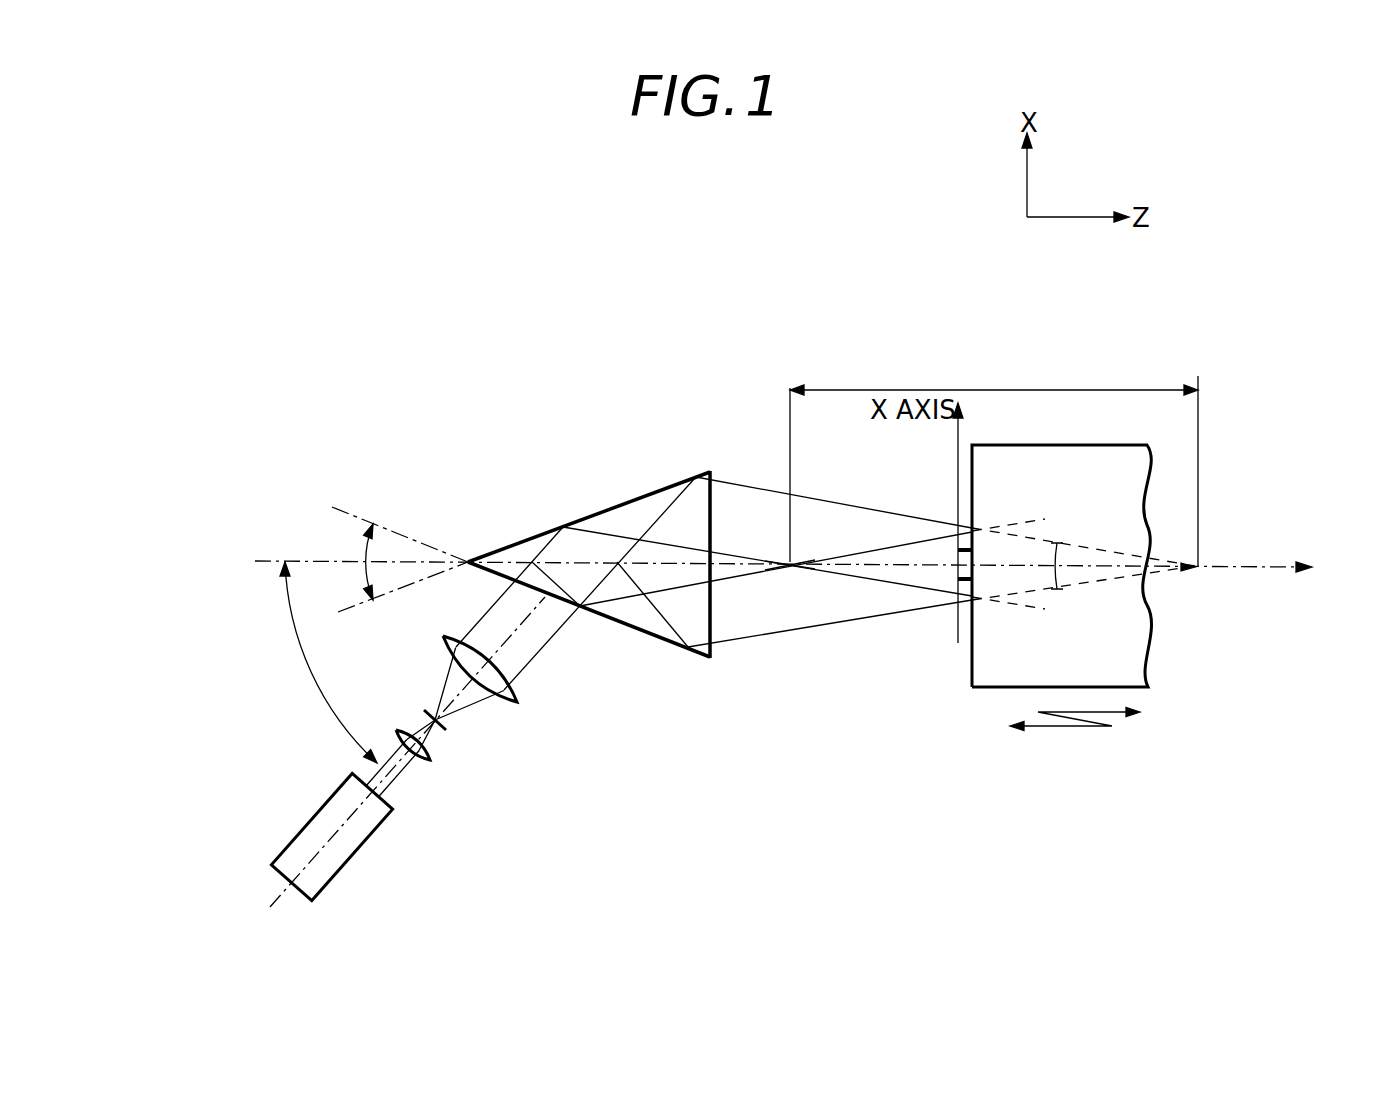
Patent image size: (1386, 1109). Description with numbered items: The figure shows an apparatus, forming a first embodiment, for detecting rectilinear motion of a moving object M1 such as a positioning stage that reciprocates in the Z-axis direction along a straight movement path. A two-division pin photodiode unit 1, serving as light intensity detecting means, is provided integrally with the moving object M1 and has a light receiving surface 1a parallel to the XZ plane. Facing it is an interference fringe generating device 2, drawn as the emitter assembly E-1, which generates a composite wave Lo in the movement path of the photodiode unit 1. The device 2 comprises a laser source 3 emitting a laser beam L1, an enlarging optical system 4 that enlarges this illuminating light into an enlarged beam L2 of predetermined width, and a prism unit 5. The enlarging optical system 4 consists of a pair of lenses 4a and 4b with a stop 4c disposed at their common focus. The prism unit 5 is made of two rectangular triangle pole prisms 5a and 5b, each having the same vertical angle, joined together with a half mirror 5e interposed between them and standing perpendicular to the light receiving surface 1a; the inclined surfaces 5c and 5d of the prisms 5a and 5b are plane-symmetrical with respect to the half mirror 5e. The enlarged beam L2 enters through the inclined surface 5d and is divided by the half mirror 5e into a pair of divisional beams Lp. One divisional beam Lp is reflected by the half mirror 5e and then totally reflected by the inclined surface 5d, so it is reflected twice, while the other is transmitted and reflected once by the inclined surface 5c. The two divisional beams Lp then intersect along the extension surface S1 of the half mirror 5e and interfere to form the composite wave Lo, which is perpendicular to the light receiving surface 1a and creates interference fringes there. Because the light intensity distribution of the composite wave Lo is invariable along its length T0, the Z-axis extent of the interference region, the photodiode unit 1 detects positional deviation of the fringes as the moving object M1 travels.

The two-division pin photodiode unit 1 is at (980, 553).
The light receiving surface 1a is at (957, 556).
The interference fringe generating device 2 is at (715, 373).
The laser source 3 is at (370, 824).
The enlarging optical system 4 is at (695, 678).
The lens 4a is at (437, 750).
The lens 4b is at (518, 696).
The stop 4c is at (447, 730).
The prism unit 5 is at (592, 534).
The rectangular triangle pole prism 5a is at (648, 507).
The rectangular triangle pole prism 5b is at (620, 610).
The inclined surface 5c is at (613, 513).
The inclined surface 5d is at (513, 573).
The half mirror 5e is at (672, 562).
The emitter unit E-1 is at (334, 357).
The laser beam L1 is at (405, 775).
The enlarged beam L2 is at (490, 610).
The divisional beams Lp is at (743, 500).
The composite wave Lo is at (919, 570).
The extension surface of the half mirror S1 is at (745, 560).
The length of the composite wave T0 is at (1128, 390).
The moving object M1 is at (998, 662).